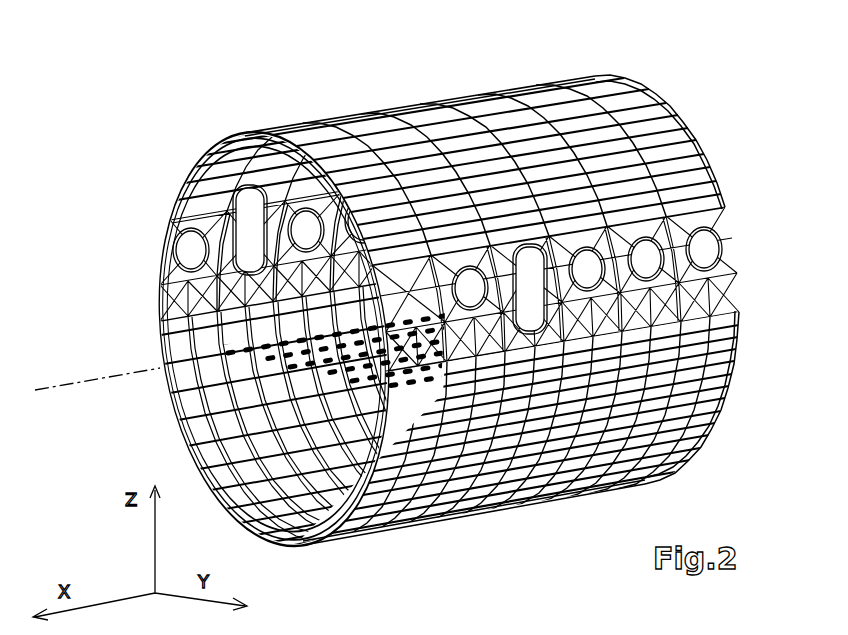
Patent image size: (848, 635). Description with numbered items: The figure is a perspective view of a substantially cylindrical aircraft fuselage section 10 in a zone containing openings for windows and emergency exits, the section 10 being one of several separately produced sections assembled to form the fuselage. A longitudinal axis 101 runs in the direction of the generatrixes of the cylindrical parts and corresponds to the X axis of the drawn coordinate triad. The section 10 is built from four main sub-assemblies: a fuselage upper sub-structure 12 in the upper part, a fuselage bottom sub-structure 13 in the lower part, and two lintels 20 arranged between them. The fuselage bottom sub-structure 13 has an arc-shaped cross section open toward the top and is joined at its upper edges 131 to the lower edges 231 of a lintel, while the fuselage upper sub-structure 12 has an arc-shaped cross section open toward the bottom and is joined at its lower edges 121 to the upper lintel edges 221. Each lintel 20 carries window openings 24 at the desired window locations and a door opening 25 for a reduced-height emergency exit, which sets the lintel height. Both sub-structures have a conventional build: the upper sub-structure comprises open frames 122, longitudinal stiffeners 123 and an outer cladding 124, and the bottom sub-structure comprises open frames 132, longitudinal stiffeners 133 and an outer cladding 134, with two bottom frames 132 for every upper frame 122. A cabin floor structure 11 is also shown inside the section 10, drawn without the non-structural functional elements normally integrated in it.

The aircraft fuselage section 10 is at (415, 305).
The cabin floor structure 11 is at (172, 388).
The fuselage upper sub-structure 12 is at (484, 141).
The fuselage bottom sub-structure 13 is at (547, 452).
The lintel 20 is at (145, 280).
The window opening 24 is at (700, 243).
The door opening 25 is at (546, 288).
The longitudinal axis 101 is at (80, 388).
The lower edge of the fuselage upper sub-structure 121 is at (170, 222).
The fuselage upper sub-structure frame 122 is at (262, 140).
The longitudinal stiffener of the fuselage upper sub-structure 123 is at (297, 133).
The outer cladding of the fuselage upper sub-structure 124 is at (612, 80).
The upper edge of the fuselage bottom sub-structure 131 is at (150, 330).
The fuselage bottom sub-structure frame 132 is at (300, 548).
The longitudinal stiffener of the fuselage bottom sub-structure 133 is at (240, 480).
The outer cladding of the fuselage bottom sub-structure 134 is at (735, 375).
The upper lintel edge 221 is at (165, 232).
The lower edge of the lintel 231 is at (160, 318).